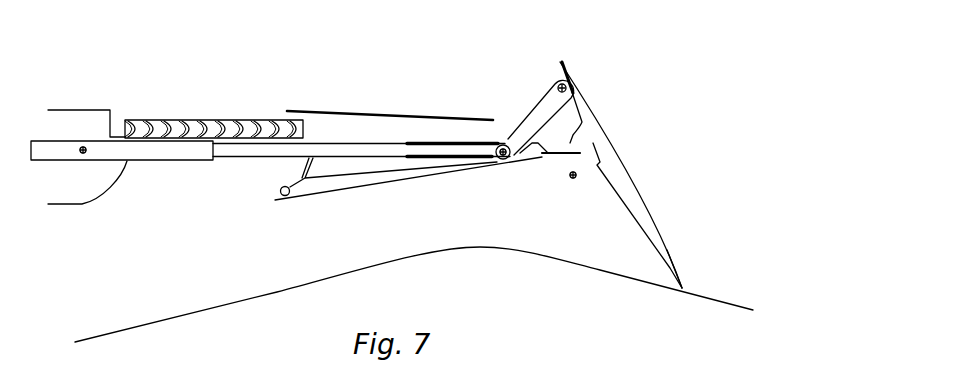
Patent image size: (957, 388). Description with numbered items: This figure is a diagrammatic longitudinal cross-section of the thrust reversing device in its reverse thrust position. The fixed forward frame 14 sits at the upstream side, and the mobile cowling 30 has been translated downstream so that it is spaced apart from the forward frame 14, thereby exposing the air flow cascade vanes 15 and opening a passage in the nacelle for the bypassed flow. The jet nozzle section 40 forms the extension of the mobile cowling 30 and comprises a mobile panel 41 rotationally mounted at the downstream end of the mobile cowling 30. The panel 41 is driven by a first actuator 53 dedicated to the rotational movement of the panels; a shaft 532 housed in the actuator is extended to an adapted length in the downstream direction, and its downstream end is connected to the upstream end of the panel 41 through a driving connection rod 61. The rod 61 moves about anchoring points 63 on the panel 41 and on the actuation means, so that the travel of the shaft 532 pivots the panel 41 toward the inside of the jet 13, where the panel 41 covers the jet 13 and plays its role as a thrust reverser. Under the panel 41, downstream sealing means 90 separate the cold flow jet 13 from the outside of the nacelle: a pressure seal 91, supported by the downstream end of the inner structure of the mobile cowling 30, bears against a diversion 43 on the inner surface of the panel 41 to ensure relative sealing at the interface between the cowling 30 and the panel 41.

The jet 13 is at (600, 253).
The forward frame 14 is at (126, 162).
The air flow cascade vanes 15 is at (155, 121).
The mobile cowling 30 is at (388, 100).
The jet nozzle section 40 is at (680, 240).
The mobile panel 41 is at (638, 188).
The diversion 43 is at (595, 152).
The first actuator 53 is at (333, 134).
The shaft 532 is at (395, 152).
The driving connection rod 61 is at (537, 113).
The anchoring points 63 is at (503, 140).
The downstream sealing means 90 is at (575, 133).
The pressure seal 91 is at (564, 152).